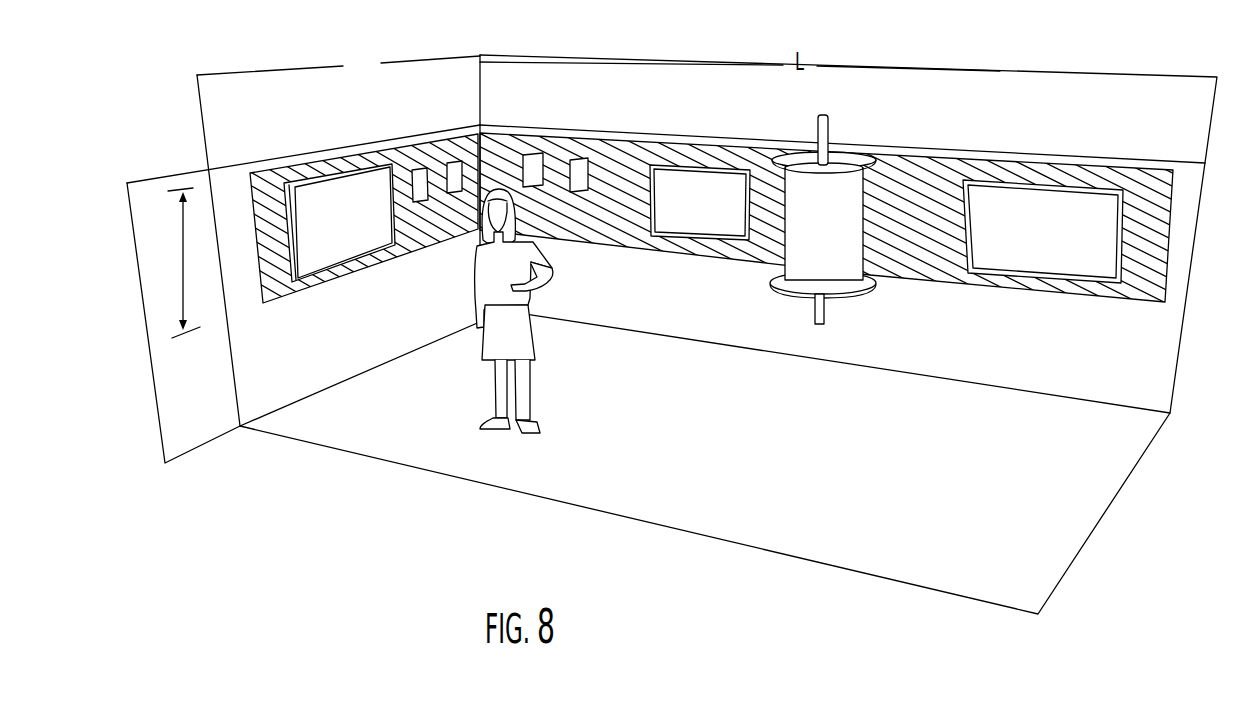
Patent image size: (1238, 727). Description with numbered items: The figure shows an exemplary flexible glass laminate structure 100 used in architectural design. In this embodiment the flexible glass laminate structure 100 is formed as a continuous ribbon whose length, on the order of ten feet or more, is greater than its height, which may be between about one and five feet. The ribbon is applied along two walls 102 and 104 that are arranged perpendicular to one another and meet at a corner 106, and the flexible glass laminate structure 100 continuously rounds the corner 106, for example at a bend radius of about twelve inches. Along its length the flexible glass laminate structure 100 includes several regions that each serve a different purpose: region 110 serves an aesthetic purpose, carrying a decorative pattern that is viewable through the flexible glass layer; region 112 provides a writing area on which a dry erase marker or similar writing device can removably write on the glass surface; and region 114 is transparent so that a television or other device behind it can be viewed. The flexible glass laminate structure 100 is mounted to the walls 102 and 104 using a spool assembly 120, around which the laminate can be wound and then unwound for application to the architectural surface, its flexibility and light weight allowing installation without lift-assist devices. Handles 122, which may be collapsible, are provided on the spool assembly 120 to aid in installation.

The flexible glass laminate structure 100 is at (1016, 118).
The wall 102 is at (1138, 362).
The wall 104 is at (260, 378).
The corner 106 is at (479, 127).
The region 110 is at (617, 245).
The region 112 is at (688, 142).
The region 114 is at (1084, 166).
The spool assembly 120 is at (884, 322).
The handles 122 is at (828, 126).